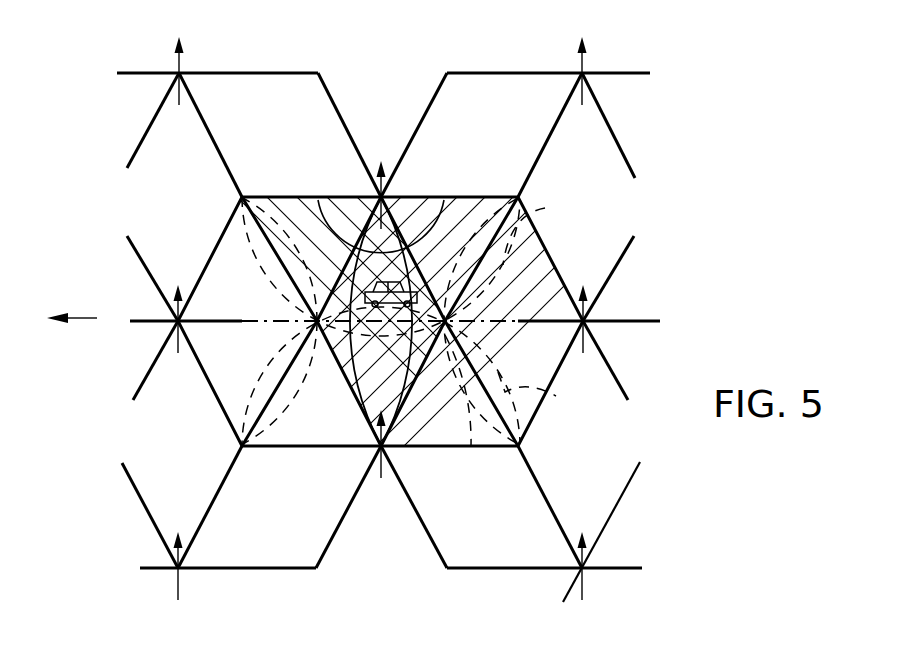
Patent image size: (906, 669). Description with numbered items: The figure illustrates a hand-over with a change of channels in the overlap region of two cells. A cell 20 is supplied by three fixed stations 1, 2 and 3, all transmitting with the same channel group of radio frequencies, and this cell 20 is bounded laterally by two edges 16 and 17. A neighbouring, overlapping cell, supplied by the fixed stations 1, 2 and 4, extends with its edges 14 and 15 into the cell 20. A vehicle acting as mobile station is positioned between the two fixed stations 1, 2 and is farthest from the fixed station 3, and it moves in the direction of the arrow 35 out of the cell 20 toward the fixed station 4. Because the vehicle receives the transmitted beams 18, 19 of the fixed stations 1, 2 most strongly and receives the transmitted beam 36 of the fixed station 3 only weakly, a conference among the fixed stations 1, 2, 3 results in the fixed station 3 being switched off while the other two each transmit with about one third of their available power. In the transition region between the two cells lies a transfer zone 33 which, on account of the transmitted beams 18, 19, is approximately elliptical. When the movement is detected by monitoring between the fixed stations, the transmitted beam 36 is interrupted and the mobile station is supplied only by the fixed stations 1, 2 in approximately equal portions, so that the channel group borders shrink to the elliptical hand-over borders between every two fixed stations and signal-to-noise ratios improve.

The fixed station 1 is at (384, 453).
The fixed station 2 is at (382, 182).
The fixed station 3 is at (582, 306).
The fixed station 4 is at (177, 305).
The edge 14 is at (448, 201).
The edge 15 is at (380, 348).
The edge 16 is at (322, 199).
The edge 17 is at (295, 448).
The transmitted beam 18 is at (545, 208).
The transmitted beam 19 is at (547, 390).
The cell 20 is at (536, 256).
The transfer zone 33 is at (335, 448).
The arrow 35 is at (86, 311).
The transmitted beam 36 is at (470, 455).